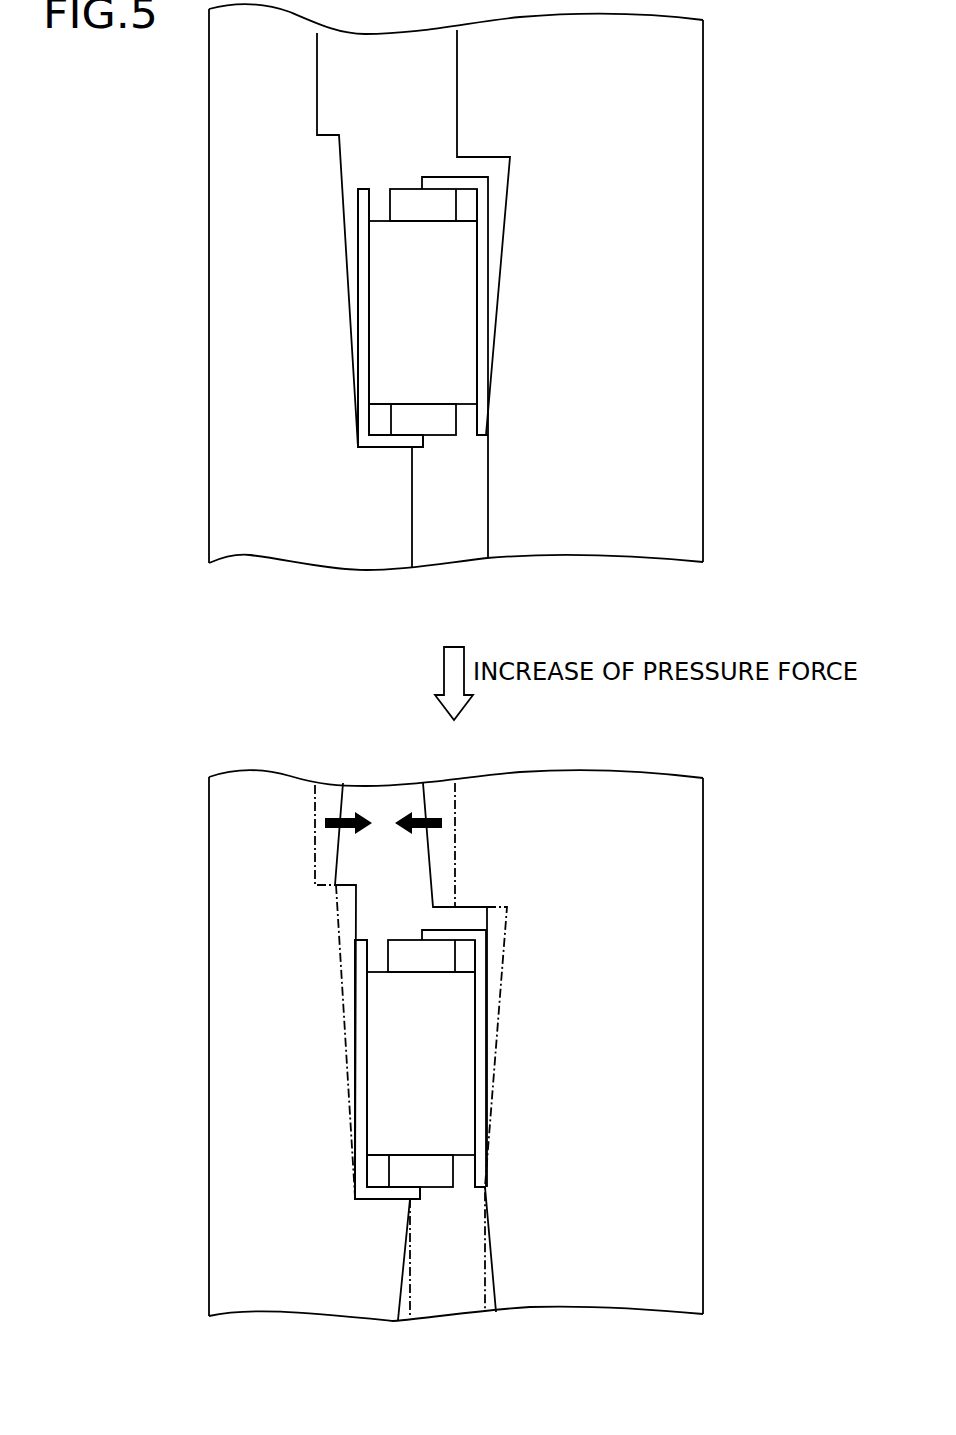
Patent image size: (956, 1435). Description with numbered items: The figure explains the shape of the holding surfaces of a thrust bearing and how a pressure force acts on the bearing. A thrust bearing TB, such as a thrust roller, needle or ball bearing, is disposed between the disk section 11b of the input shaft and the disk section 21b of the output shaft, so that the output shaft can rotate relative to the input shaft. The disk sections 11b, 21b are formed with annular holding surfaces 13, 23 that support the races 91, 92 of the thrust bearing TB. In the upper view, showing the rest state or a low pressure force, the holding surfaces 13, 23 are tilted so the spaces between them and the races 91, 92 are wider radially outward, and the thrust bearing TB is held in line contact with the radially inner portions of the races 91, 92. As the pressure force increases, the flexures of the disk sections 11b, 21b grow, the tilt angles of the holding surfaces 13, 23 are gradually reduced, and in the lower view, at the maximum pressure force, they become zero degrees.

The disk section 11b is at (209, 297).
The holding surface 13 is at (342, 165).
The disk section 21b is at (703, 298).
The holding surface 23 is at (505, 173).
The race 91 is at (360, 220).
The race 92 is at (485, 264).
The thrust bearing TB is at (447, 452).